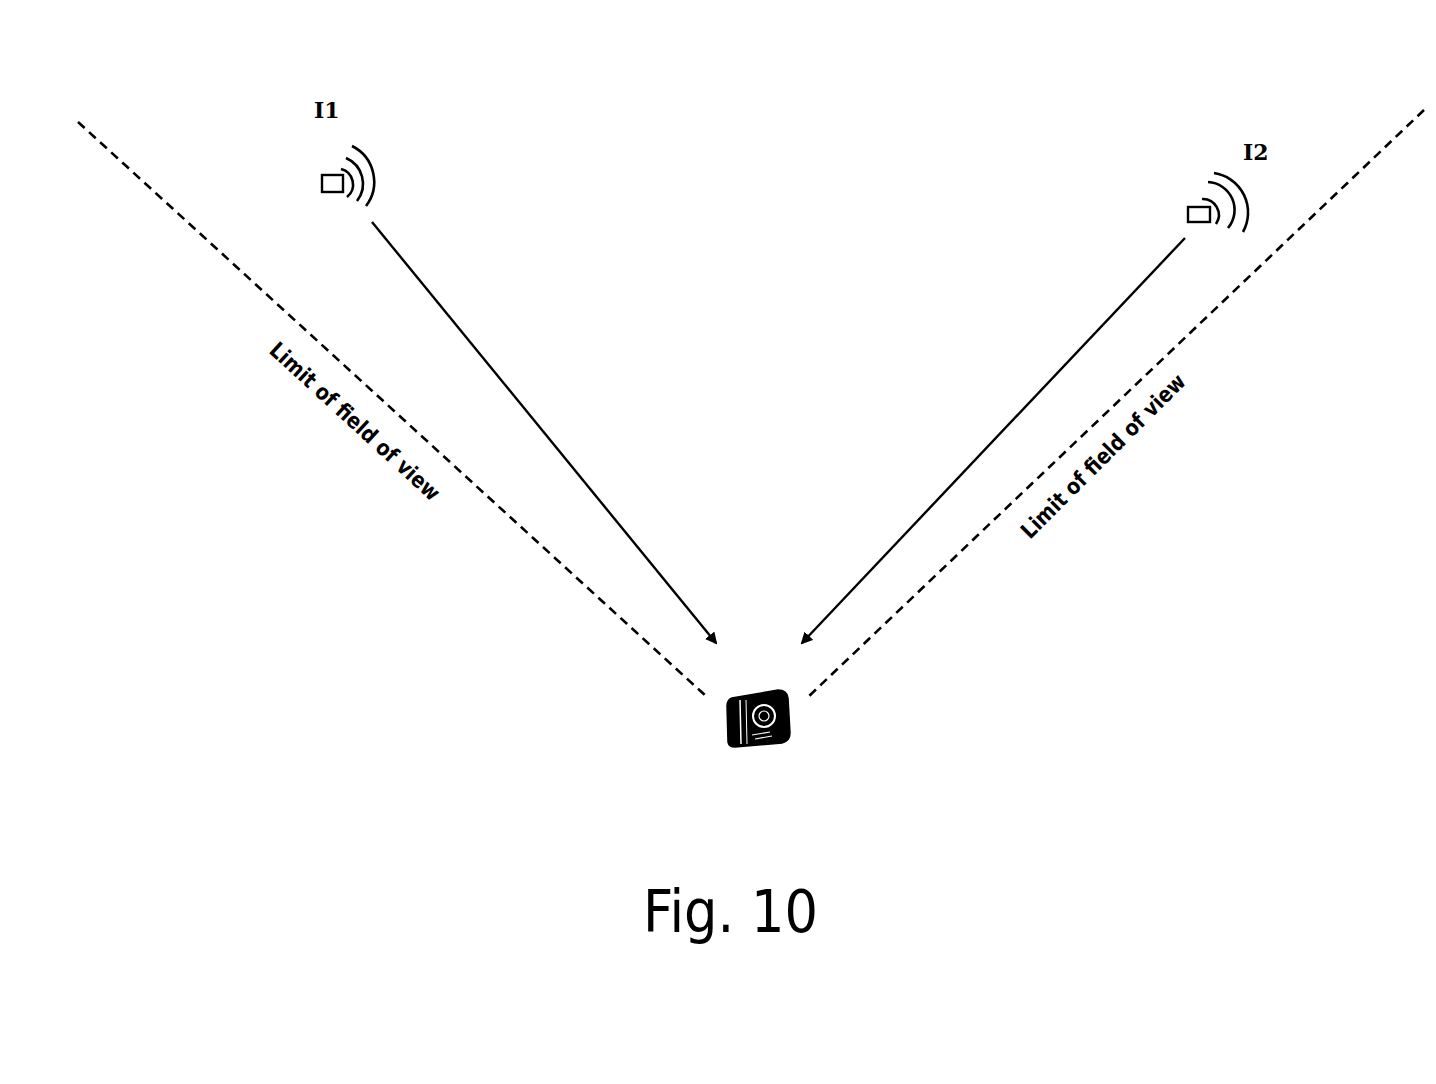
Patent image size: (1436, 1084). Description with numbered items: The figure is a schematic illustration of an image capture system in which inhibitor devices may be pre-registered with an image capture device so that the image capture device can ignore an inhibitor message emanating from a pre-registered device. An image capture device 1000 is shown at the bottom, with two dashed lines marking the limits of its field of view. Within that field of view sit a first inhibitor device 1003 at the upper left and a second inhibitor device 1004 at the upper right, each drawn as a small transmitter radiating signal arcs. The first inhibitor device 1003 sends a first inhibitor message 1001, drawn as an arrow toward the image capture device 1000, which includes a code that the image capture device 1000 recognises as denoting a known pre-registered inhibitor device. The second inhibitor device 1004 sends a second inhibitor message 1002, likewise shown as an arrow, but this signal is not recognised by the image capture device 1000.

The image capture device 1000 is at (800, 723).
The first inhibitor message 1001 is at (527, 370).
The second inhibitor message 1002 is at (1058, 370).
The first inhibitor device 1003 is at (365, 143).
The second inhibitor device 1004 is at (1208, 185).